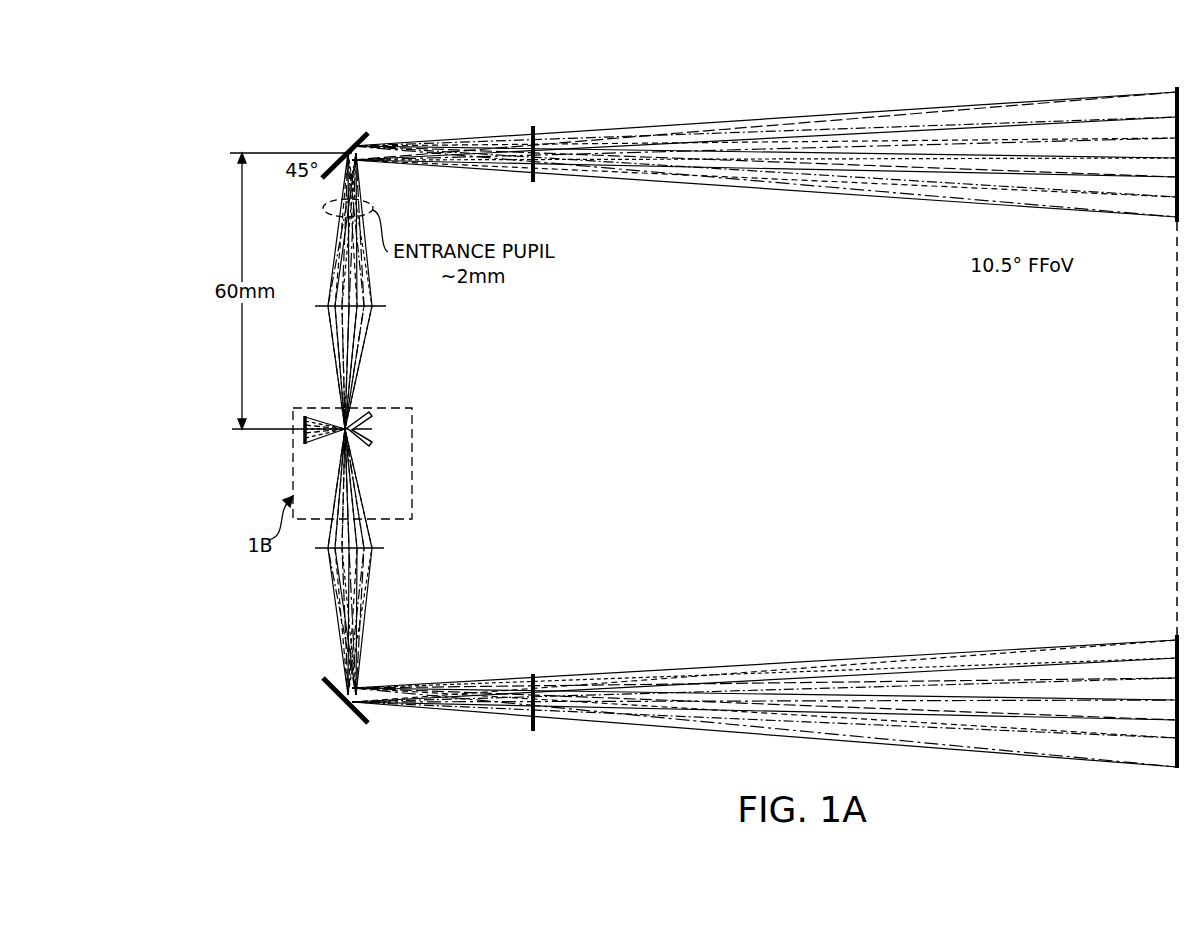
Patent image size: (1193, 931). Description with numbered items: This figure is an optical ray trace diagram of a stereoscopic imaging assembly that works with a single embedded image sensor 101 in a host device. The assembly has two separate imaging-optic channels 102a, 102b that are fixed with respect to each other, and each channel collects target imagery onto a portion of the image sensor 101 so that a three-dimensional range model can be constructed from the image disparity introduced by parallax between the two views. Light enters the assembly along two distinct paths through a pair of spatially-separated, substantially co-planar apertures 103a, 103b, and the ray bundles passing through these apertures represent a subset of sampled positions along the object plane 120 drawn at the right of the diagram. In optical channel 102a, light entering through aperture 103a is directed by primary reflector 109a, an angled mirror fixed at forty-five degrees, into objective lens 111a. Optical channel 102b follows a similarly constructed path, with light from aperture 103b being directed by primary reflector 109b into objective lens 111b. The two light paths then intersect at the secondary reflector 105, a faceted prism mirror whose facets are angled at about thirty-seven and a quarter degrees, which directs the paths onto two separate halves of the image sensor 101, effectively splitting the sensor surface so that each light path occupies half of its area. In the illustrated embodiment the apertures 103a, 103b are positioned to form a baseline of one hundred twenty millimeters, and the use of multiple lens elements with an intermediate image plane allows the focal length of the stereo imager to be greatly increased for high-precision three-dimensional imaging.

The image sensor 101 is at (305, 433).
The optical channel 102a is at (404, 126).
The optical channel 102b is at (400, 729).
The aperture 103a is at (533, 183).
The aperture 103b is at (533, 674).
The secondary reflector 105 is at (360, 429).
The primary reflector 109a is at (347, 138).
The primary reflector 109b is at (345, 700).
The objective lens 111a is at (386, 306).
The objective lens 111b is at (384, 548).
The object plane 120 is at (1175, 405).